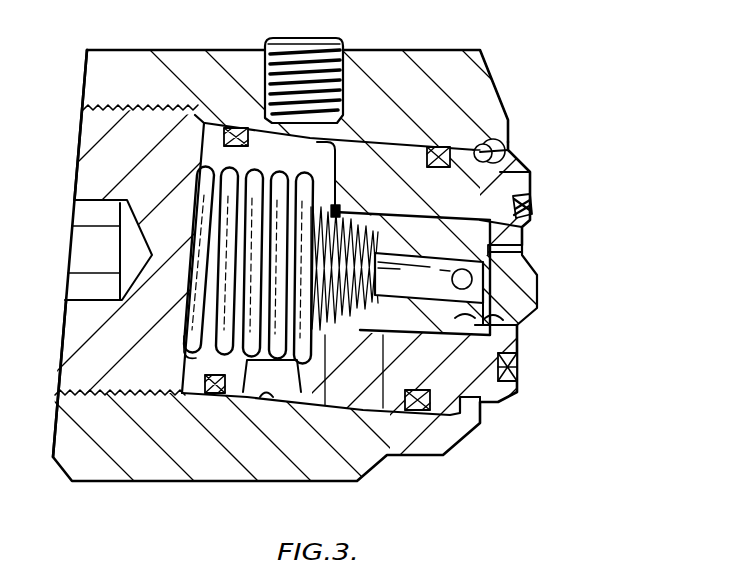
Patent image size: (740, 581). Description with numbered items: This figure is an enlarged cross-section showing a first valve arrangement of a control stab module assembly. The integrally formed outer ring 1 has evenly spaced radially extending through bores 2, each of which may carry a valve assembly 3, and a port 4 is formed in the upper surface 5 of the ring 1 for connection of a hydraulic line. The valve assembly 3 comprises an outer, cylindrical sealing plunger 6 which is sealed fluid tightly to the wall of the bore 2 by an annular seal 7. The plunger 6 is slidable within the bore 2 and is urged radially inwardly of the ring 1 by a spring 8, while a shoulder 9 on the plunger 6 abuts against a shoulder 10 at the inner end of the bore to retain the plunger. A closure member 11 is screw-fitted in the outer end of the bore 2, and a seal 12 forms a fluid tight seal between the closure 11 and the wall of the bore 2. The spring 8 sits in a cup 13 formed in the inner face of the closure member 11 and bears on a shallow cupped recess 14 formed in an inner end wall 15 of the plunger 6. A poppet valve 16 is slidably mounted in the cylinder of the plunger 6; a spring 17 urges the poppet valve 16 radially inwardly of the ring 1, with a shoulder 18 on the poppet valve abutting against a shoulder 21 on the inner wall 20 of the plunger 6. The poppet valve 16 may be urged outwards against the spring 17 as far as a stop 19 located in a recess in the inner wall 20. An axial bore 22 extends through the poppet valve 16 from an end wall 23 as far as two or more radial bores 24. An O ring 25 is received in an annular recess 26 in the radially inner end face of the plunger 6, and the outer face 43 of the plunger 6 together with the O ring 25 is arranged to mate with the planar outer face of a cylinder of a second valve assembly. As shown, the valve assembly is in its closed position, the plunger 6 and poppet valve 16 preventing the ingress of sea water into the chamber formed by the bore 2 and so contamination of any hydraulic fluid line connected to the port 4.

The outer ring 1 is at (440, 50).
The through bore 2 is at (273, 395).
The valve assembly 3 is at (552, 379).
The port 4 is at (343, 48).
The upper surface 5 is at (168, 49).
The sealing plunger 6 is at (533, 182).
The annular seal 7 is at (440, 412).
The spring 8 is at (202, 293).
The shoulder 9 is at (500, 119).
The shoulder 10 is at (505, 143).
The closure member 11 is at (95, 347).
The seal 12 is at (212, 395).
The cup 13 is at (190, 370).
The shallow cupped recess 14 is at (224, 128).
The inner end wall 15 is at (270, 168).
The poppet valve 16 is at (530, 305).
The spring 17 is at (385, 405).
The shoulder 18 is at (517, 347).
The stop 19 is at (323, 400).
The inner wall 20 is at (465, 412).
The shoulder 21 is at (514, 394).
The axial bore 22 is at (538, 284).
The end wall 23 is at (412, 412).
The radial bore 24 is at (533, 258).
The O ring 25 is at (519, 370).
The annular recess 26 is at (512, 385).
The outer face 43 is at (533, 190).